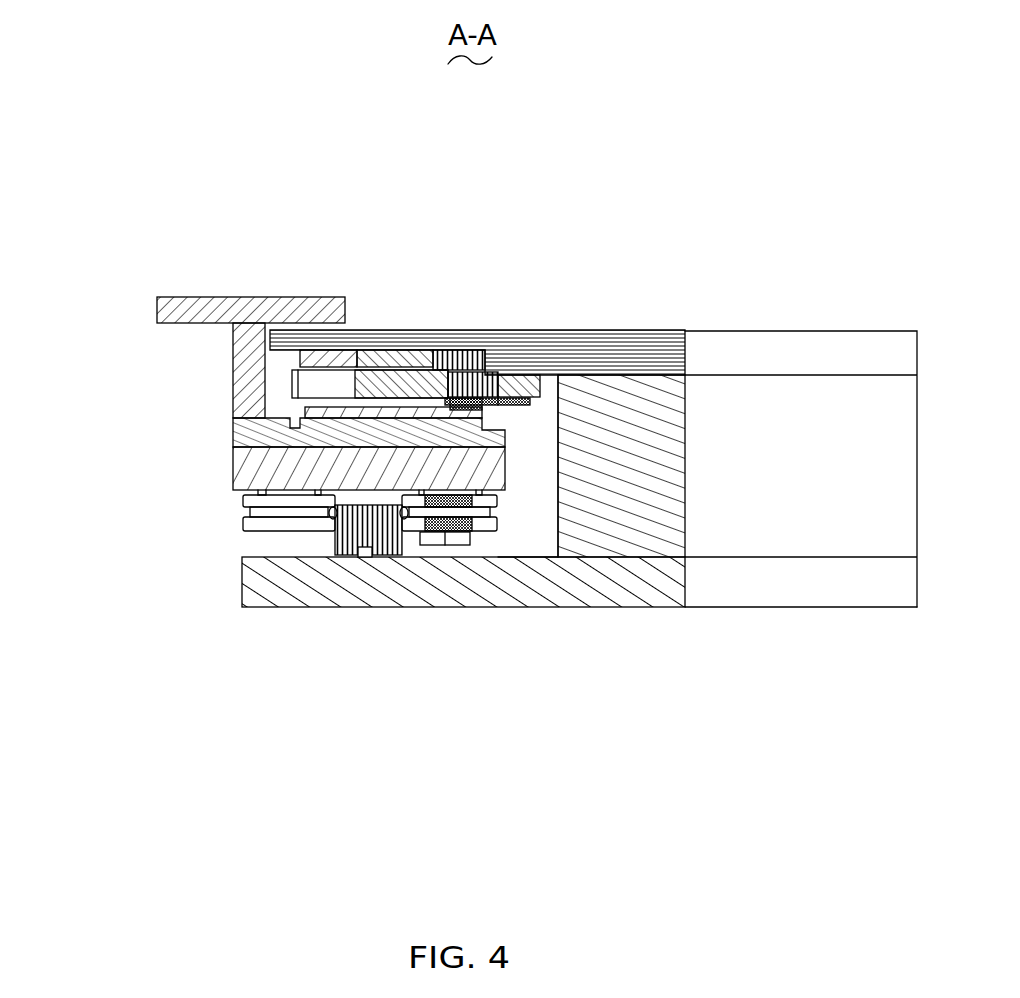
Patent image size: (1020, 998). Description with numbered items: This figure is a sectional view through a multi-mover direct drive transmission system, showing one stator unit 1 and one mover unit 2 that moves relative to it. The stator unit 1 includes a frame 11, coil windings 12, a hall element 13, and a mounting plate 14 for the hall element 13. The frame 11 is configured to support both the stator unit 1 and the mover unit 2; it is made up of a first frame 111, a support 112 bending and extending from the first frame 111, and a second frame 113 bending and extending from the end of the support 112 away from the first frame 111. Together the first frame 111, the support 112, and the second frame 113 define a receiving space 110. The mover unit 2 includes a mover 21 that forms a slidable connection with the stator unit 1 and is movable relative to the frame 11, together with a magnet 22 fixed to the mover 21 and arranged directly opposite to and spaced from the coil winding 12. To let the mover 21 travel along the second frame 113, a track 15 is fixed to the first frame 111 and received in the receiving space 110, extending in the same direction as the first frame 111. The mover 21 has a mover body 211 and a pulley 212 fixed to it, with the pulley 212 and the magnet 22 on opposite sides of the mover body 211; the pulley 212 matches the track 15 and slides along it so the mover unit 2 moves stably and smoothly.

The stator unit 1 is at (522, 222).
The frame 11 is at (557, 357).
The receiving space 110 is at (516, 528).
The first frame 111 is at (412, 577).
The support 112 is at (584, 505).
The second frame 113 is at (600, 353).
The coil winding 12 is at (325, 387).
The hall element 13 is at (455, 355).
The mounting plate 14 is at (512, 367).
The track 15 is at (365, 525).
The mover unit 2 is at (62, 450).
The mover 21 is at (110, 485).
The mover body 211 is at (283, 472).
The pulley 212 is at (273, 528).
The magnet 22 is at (256, 422).